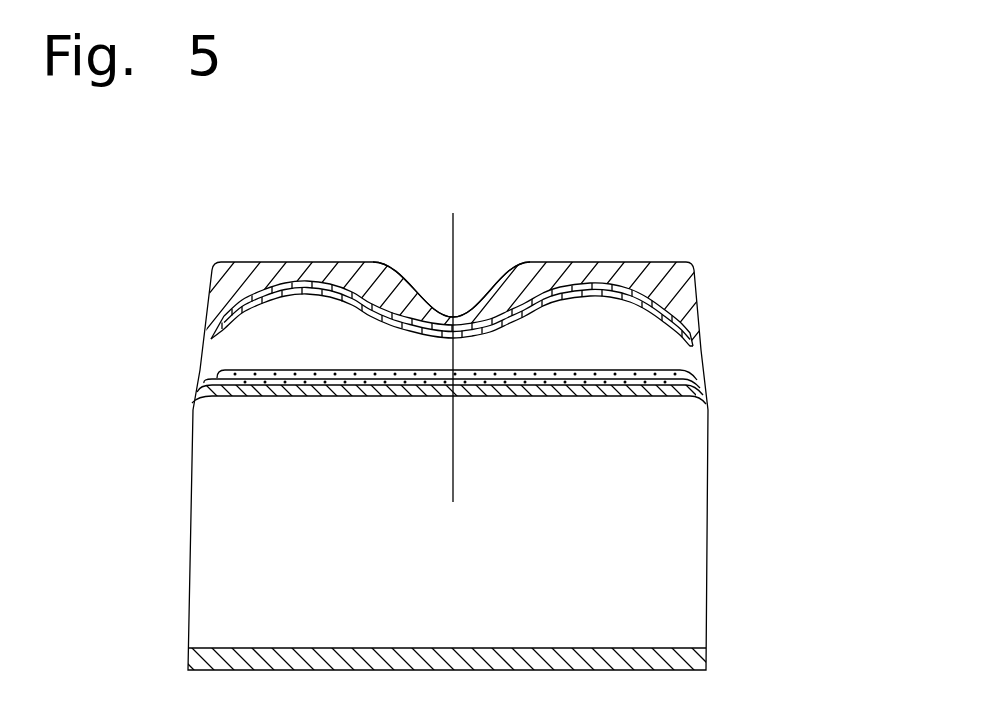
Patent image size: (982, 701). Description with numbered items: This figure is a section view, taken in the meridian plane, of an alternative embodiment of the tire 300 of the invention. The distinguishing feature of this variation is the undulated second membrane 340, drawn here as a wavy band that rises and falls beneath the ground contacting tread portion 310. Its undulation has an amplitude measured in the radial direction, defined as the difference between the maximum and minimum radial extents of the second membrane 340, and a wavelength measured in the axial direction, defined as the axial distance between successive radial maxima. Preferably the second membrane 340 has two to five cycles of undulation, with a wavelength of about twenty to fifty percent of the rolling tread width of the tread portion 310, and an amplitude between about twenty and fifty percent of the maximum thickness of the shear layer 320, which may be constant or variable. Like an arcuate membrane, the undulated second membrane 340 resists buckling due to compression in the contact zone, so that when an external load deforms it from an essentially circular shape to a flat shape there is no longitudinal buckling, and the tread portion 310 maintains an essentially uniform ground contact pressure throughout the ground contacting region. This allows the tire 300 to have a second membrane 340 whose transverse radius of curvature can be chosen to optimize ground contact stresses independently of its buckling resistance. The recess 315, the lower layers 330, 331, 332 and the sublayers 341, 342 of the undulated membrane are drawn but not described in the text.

The tire 300 is at (162, 313).
The tread portion 310 is at (280, 262).
The combustion bowl recess 315 is at (428, 282).
The shear layer 320 is at (278, 353).
The lower heat insulating layer 330 is at (500, 387).
The lower intermediate layer 331 is at (670, 376).
The lower porous layer 332 is at (600, 370).
The second membrane 340 is at (562, 278).
The inner layer of curved insulating layer 341 is at (690, 332).
The outer layer of curved insulating layer 342 is at (694, 291).